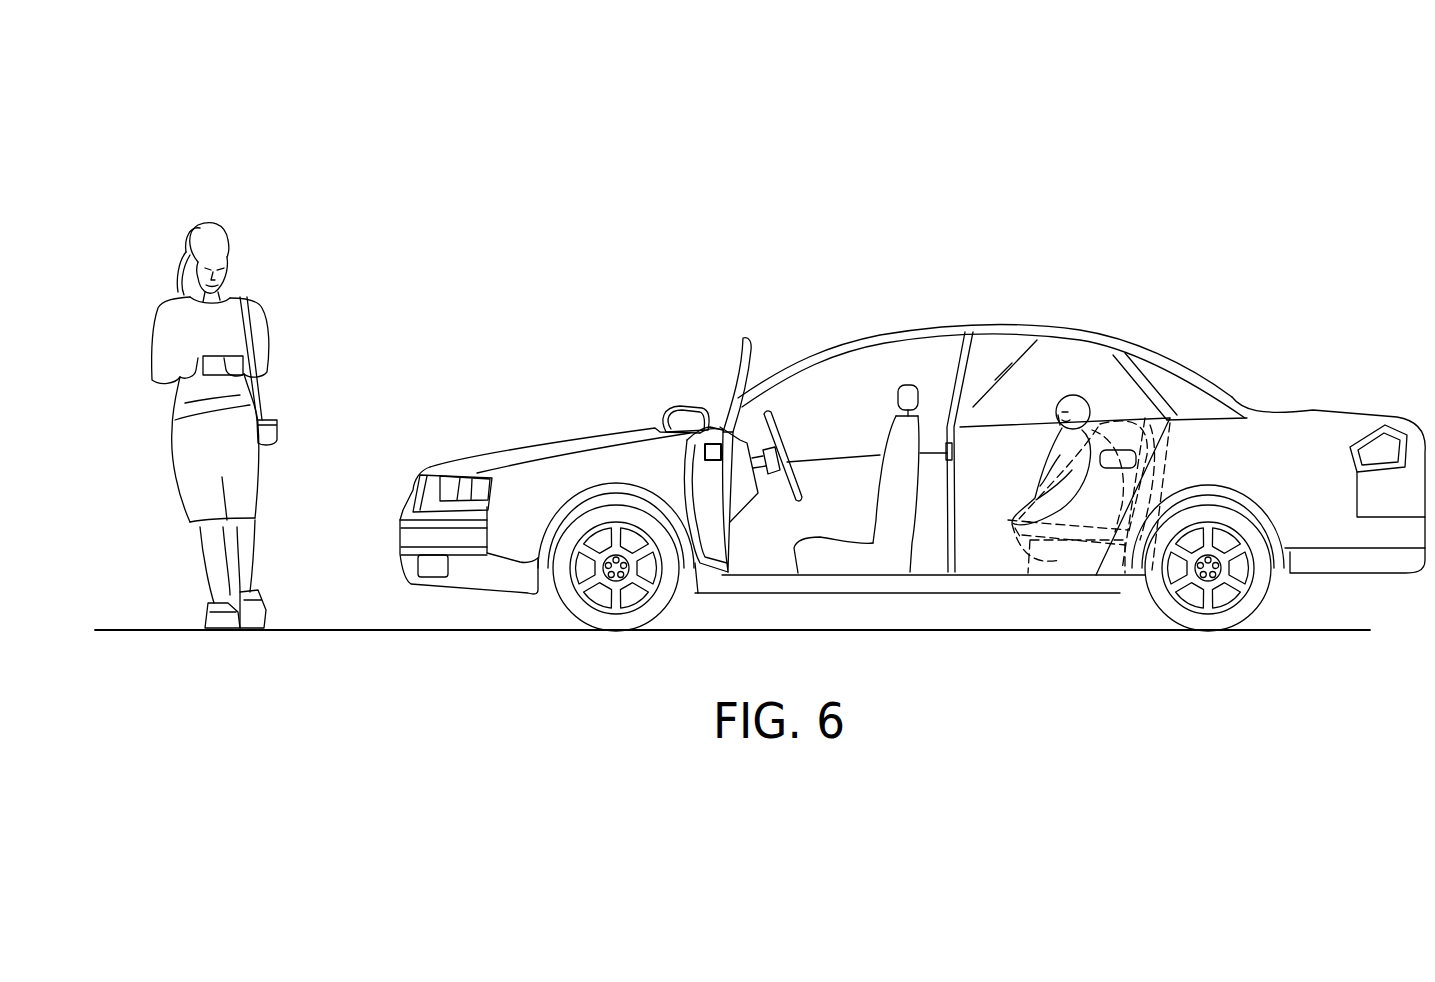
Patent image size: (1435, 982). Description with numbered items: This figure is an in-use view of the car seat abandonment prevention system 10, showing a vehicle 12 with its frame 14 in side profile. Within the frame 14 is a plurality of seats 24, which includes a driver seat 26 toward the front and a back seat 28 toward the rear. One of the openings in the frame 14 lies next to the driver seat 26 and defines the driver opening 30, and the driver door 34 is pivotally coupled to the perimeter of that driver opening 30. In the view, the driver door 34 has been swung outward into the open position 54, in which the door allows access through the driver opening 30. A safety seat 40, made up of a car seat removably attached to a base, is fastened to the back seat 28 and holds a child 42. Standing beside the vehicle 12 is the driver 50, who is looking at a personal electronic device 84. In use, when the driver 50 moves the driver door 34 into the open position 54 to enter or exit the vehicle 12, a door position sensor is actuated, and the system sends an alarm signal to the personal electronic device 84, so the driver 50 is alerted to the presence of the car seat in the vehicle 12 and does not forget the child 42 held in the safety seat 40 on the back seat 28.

The car seat abandonment prevention system 10 is at (1097, 133).
The vehicle 12 is at (1003, 317).
The frame 14 is at (1312, 442).
The plurality of seats 24 is at (908, 385).
The driver seat 26 is at (848, 558).
The back seat 28 is at (1083, 560).
The driver opening 30 is at (860, 417).
The driver door 34 is at (697, 478).
The safety seat 40 is at (1020, 555).
The child 42 is at (1078, 403).
The driver 50 is at (216, 252).
The open position 54 is at (747, 331).
The personal electronic device 84 is at (228, 378).